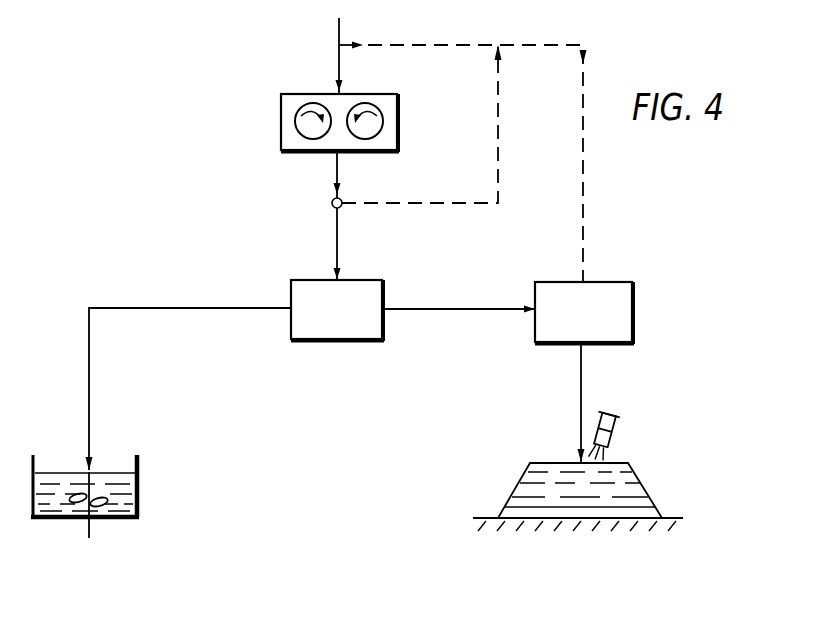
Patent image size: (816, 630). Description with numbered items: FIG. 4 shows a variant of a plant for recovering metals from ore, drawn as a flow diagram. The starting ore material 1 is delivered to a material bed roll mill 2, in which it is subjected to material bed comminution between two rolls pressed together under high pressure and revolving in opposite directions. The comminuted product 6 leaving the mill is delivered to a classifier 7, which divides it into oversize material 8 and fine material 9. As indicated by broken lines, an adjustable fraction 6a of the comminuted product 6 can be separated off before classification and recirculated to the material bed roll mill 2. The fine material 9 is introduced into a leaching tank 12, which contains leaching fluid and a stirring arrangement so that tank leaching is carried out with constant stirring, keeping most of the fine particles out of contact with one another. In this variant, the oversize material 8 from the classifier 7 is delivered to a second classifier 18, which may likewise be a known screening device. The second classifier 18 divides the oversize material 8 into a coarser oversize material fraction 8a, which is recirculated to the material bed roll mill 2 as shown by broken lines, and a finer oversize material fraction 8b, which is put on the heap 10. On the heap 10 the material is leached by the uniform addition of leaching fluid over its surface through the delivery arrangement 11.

The starting ore material 1 is at (339, 31).
The material bed roll mill 2 is at (279, 123).
The comminuted product 6 is at (337, 243).
The adjustable fraction of the comminuted product 6a is at (441, 203).
The classifier 7 is at (386, 287).
The oversize material 8 is at (437, 312).
The coarser oversize material fraction 8a is at (583, 188).
The finer oversize material fraction 8b is at (581, 393).
The fine material 9 is at (91, 385).
The heap 10 is at (648, 485).
The delivery arrangement 11 is at (616, 432).
The leaching tank 12 is at (139, 490).
The second classifier 18 is at (636, 297).